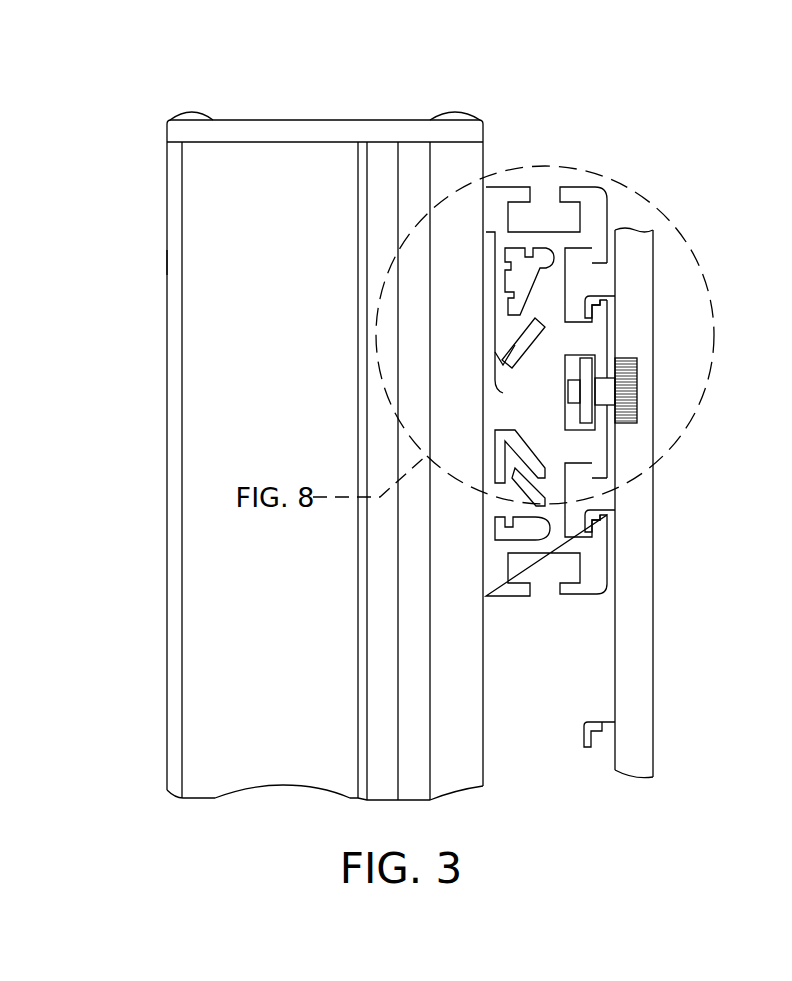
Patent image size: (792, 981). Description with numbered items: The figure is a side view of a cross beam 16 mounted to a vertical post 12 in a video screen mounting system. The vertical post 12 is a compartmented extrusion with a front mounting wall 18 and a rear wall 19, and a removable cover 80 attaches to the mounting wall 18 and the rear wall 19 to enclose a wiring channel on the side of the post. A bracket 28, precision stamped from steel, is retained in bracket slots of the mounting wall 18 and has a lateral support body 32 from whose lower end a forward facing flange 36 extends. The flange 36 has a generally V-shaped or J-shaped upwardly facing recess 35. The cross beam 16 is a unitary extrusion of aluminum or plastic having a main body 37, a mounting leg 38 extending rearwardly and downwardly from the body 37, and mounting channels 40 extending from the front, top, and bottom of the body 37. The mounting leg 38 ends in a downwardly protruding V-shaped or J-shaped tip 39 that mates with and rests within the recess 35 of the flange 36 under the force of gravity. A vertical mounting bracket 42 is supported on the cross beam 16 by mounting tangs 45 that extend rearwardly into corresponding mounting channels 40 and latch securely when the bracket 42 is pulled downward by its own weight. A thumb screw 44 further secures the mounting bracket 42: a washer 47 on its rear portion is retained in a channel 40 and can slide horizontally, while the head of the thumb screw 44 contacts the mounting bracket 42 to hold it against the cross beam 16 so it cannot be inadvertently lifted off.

The vertical post 12 is at (352, 101).
The removable cover 80 is at (238, 172).
The rear wall 19 is at (167, 262).
The front mounting wall 18 is at (485, 165).
The mounting channel 40 is at (545, 200).
The lateral support body 32 is at (497, 282).
The tip 39 is at (498, 346).
The upwardly facing recess 35 is at (495, 366).
The forward facing flange 36 is at (533, 343).
The bracket 28 is at (500, 392).
The mounting leg 38 is at (553, 290).
The mounting tang 45 is at (587, 311).
The main body 37 is at (553, 333).
The washer 47 is at (585, 422).
The thumb screw 44 is at (615, 412).
The vertical mounting bracket 42 is at (635, 582).
The cross beam 16 is at (605, 189).